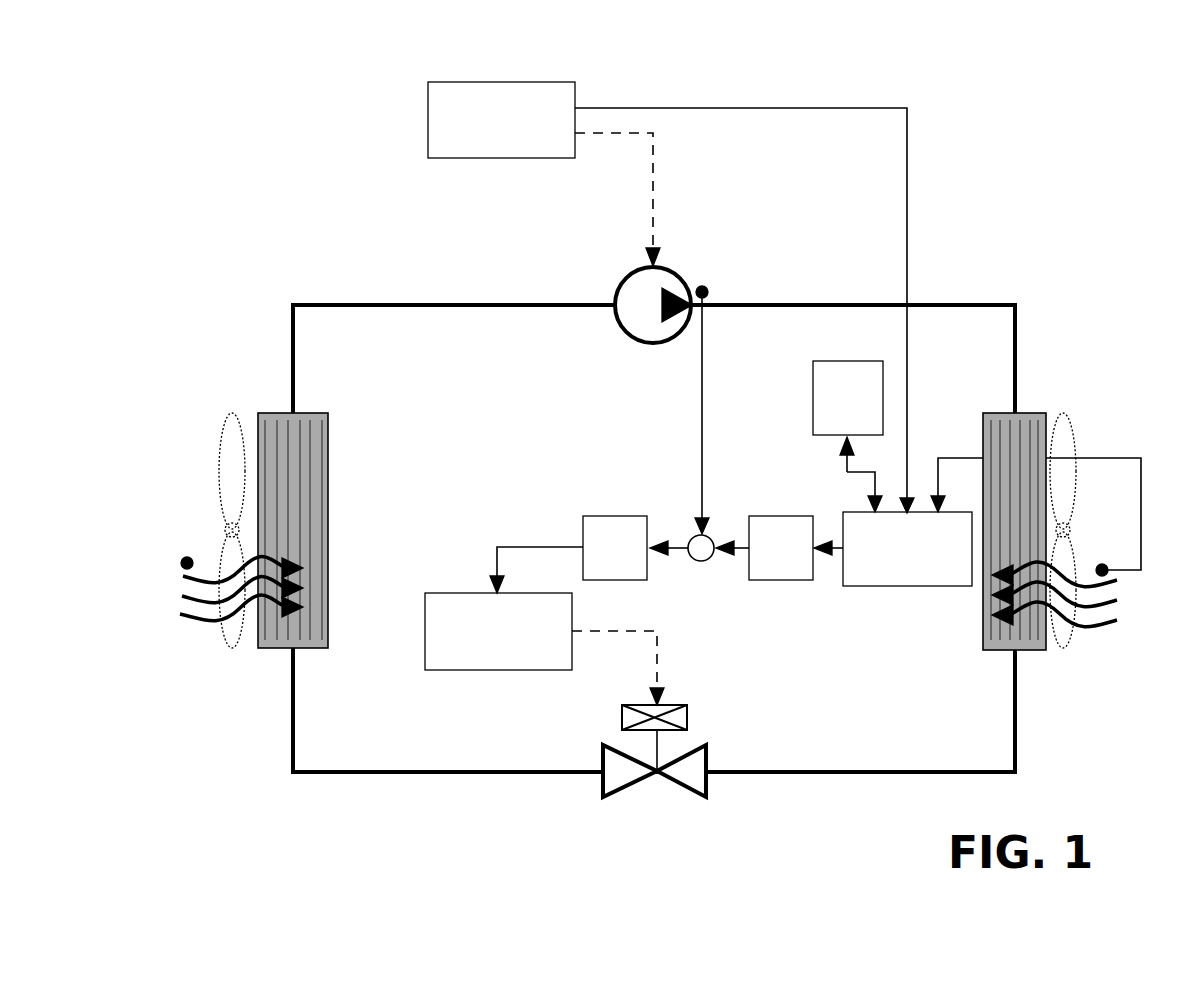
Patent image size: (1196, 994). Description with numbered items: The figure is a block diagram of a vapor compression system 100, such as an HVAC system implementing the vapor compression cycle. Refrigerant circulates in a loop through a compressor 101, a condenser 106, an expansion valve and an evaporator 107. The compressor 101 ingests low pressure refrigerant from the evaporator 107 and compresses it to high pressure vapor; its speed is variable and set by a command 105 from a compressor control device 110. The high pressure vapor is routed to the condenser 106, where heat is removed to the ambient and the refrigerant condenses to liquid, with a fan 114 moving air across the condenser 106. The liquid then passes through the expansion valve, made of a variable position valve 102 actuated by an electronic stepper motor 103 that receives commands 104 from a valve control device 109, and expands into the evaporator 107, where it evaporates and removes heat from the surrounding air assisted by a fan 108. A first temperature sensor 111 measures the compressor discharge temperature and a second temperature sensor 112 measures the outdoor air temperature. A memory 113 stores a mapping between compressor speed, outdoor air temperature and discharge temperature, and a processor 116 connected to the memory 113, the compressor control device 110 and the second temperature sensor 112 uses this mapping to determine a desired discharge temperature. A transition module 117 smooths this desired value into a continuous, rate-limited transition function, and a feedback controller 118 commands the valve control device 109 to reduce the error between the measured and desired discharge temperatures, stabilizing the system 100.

The vapor compression system 100 is at (853, 790).
The compressor 101 is at (661, 348).
The variable position valve 102 is at (684, 792).
The electronic stepper motor 103 is at (690, 714).
The commands 104 is at (660, 654).
The command 105 is at (654, 182).
The condenser 106 is at (983, 638).
The evaporator 107 is at (333, 505).
The fan 108 is at (222, 440).
The valve control device 109 is at (460, 595).
The compressor control device 110 is at (577, 92).
The first temperature sensor 111 is at (708, 290).
The second temperature sensor 112 is at (1142, 568).
The memory 113 is at (813, 366).
The fan 114 is at (1070, 432).
The processor 116 is at (873, 588).
The transition module 117 is at (793, 583).
The feedback controller 118 is at (600, 518).